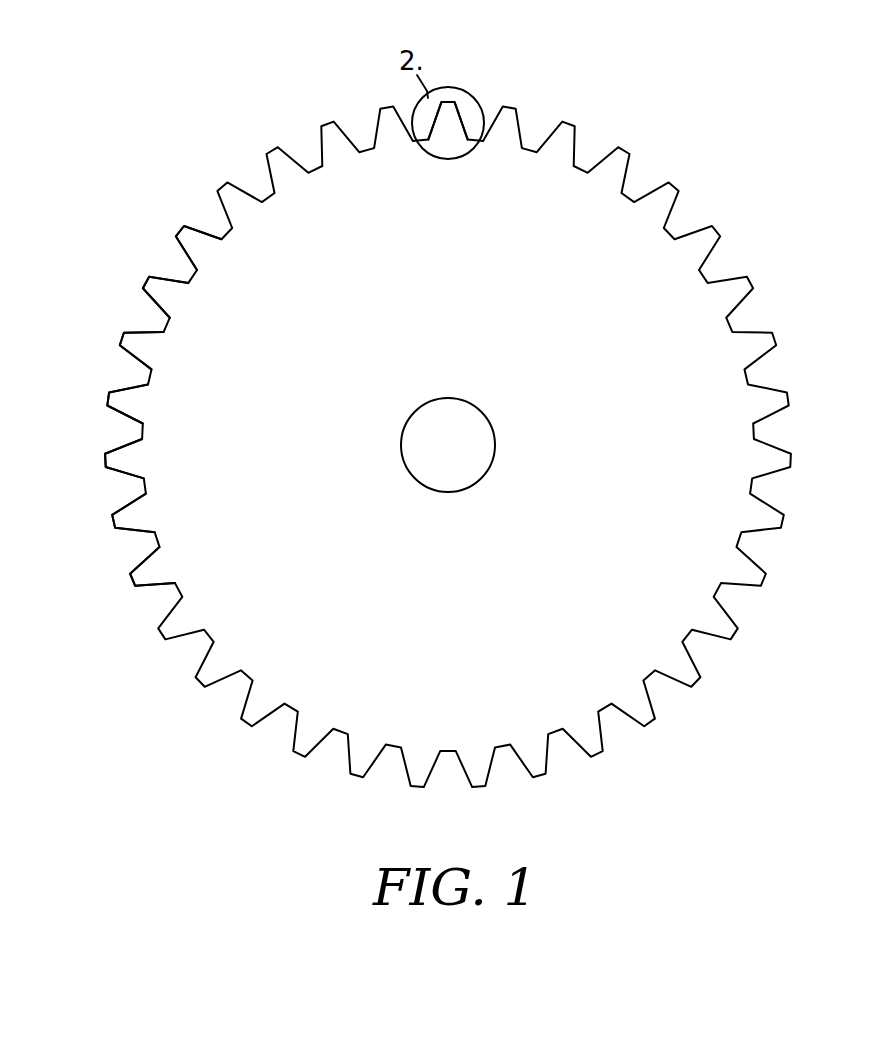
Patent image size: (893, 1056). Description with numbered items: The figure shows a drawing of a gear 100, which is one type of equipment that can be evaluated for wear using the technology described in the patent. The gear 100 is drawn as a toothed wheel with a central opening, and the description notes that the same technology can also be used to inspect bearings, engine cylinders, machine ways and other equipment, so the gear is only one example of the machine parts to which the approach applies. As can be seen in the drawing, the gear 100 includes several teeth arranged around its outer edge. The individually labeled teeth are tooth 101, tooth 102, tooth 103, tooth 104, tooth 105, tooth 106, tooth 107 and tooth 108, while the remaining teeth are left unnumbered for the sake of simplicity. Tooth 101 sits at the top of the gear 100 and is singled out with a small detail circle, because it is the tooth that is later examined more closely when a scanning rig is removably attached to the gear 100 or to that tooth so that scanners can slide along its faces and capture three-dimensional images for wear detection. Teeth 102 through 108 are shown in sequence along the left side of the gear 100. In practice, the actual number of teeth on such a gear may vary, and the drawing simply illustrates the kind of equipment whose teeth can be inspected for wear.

The gear 100 is at (320, 466).
The tooth 101 is at (448, 123).
The tooth 102 is at (177, 238).
The tooth 103 is at (147, 297).
The tooth 104 is at (132, 350).
The tooth 105 is at (110, 406).
The tooth 106 is at (117, 462).
The tooth 107 is at (120, 518).
The tooth 108 is at (150, 575).